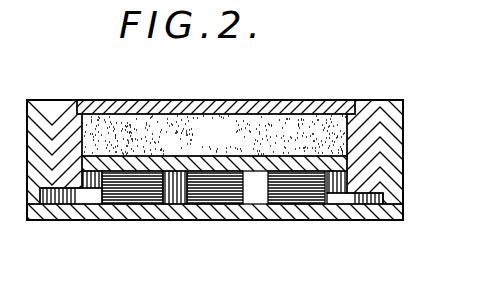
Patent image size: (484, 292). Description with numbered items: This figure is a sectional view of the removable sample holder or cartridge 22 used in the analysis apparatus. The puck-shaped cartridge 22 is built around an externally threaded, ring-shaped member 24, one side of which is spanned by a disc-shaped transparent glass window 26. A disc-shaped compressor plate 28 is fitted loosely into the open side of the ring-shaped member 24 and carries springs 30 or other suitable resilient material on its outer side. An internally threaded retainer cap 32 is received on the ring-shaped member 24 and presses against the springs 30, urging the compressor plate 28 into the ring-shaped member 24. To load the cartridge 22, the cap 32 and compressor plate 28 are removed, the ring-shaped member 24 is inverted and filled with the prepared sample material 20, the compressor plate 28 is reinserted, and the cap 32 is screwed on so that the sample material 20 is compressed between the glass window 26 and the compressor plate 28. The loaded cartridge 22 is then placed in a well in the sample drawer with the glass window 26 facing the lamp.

The sample material 20 is at (231, 143).
The sample holder or cartridge 22 is at (414, 133).
The ring-shaped member 24 is at (367, 121).
The transparent glass window 26 is at (106, 110).
The compressor plate 28 is at (175, 178).
The springs 30 is at (130, 190).
The retainer cap 32 is at (380, 205).